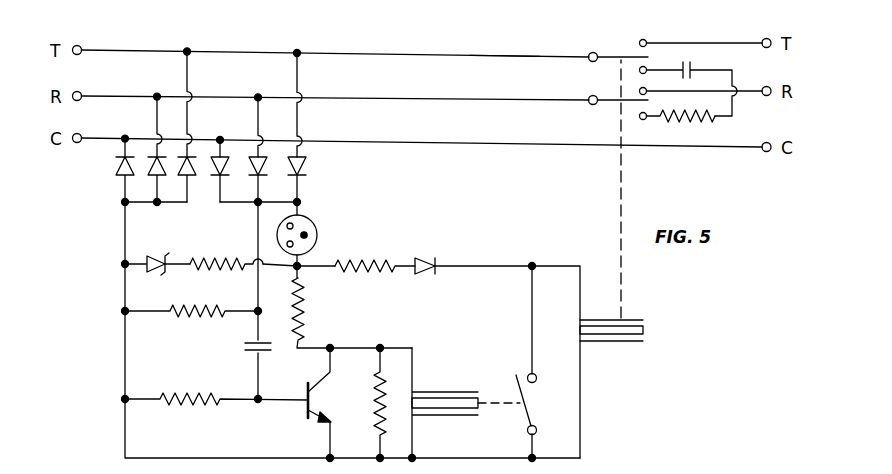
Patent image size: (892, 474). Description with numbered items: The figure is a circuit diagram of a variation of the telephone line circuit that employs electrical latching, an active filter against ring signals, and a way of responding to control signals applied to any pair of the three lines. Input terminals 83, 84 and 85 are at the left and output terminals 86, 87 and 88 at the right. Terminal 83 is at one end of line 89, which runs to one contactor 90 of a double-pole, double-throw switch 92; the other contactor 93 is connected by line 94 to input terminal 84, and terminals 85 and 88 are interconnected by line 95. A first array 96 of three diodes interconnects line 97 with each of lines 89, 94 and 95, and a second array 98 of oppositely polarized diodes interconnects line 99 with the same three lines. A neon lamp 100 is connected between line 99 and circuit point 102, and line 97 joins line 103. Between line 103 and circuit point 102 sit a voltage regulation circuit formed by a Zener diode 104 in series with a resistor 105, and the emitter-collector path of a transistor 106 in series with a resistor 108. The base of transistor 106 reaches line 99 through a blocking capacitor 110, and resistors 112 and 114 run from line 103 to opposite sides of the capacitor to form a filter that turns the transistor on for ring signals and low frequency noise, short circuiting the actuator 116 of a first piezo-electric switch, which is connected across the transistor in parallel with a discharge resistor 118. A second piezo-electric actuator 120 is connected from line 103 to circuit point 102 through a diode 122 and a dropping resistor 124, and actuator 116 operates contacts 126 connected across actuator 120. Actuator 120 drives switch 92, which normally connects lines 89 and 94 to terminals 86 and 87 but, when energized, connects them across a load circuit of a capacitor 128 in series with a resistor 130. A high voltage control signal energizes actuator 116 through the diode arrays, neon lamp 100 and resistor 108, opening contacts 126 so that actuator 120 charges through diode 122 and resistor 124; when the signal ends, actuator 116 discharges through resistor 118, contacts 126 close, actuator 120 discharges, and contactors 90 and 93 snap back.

The input terminal 83 is at (81, 47).
The input terminal 84 is at (81, 93).
The input terminal 85 is at (81, 135).
The output terminal 86 is at (763, 39).
The output terminal 87 is at (766, 86).
The output terminal 88 is at (765, 152).
The line 89 is at (397, 50).
The contactor 90 is at (596, 52).
The double-pole, double-throw switch 92 is at (505, 51).
The contactor 93 is at (590, 104).
The line 94 is at (440, 97).
The line 95 is at (441, 140).
The first array of three diodes 96 is at (112, 184).
The line 97 is at (160, 205).
The second array of oppositely polarized diodes 98 is at (307, 167).
The line 99 is at (238, 205).
The neon lamp 100 is at (308, 232).
The circuit point 102 is at (301, 272).
The line 103 is at (124, 368).
The Zener diode 104 is at (142, 271).
The resistor 105 is at (196, 271).
The transistor 106 is at (312, 410).
The resistor 108 is at (306, 318).
The blocking capacitor 110 is at (248, 348).
The resistor 112 is at (192, 408).
The resistor 114 is at (186, 318).
The actuator 116 is at (448, 391).
The discharge resistor 118 is at (376, 409).
The actuator 120 is at (613, 343).
The diode 122 is at (439, 262).
The dropping resistor 124 is at (356, 262).
The contacts 126 is at (535, 401).
The capacitor 128 is at (692, 72).
The resistor 130 is at (714, 116).